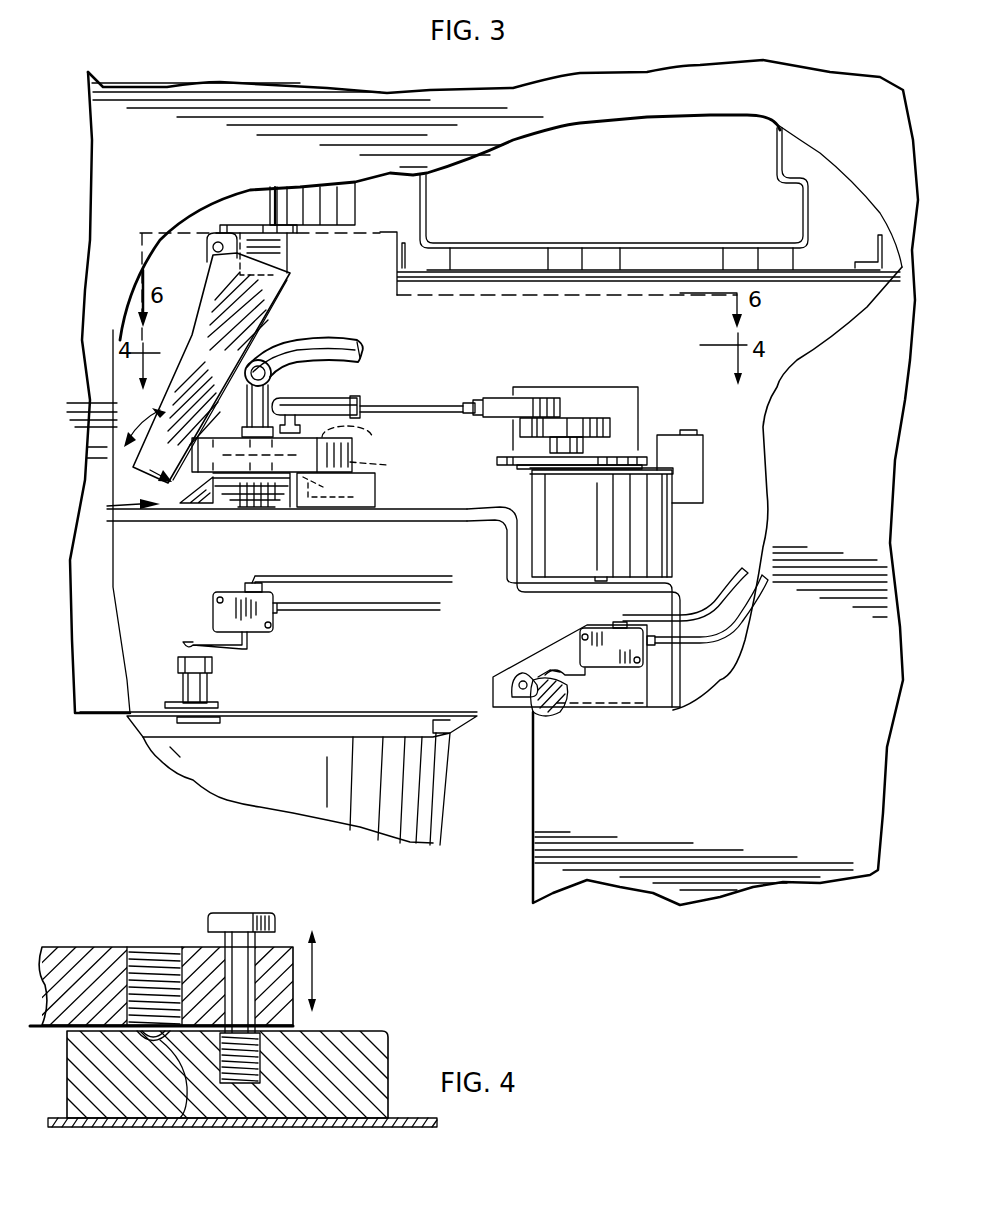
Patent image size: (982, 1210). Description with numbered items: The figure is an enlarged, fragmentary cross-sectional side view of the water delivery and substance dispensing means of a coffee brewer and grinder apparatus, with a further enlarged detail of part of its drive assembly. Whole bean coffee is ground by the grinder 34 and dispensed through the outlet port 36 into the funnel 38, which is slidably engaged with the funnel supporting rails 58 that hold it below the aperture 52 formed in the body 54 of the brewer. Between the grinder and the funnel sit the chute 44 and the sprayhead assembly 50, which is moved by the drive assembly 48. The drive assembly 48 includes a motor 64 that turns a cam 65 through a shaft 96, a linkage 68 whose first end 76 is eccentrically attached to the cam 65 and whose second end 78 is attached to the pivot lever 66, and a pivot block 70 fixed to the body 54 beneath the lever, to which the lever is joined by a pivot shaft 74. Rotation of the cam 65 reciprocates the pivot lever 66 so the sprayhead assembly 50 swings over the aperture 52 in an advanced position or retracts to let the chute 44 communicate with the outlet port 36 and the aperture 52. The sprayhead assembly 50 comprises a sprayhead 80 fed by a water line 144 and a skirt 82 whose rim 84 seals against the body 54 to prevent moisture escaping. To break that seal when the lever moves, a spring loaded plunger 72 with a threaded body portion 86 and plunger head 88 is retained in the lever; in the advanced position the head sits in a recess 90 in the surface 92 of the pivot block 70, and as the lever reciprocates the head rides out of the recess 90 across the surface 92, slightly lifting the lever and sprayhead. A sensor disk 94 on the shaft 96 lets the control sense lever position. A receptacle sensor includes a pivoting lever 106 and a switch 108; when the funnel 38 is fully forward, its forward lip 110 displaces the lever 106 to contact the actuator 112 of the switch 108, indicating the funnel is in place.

In FIG. 3, the grinder 34 is at (297, 200).
In FIG. 3, the outlet port 36 is at (287, 247).
In FIG. 3, the funnel 38 is at (313, 797).
In FIG. 3, the chute 44 is at (210, 287).
In FIG. 3, the drive assembly 48 is at (455, 388).
In FIG. 3, the sprayhead assembly 50 is at (135, 482).
In FIG. 3, the aperture 52 is at (330, 521).
In FIG. 3, the body 54 is at (490, 508).
In FIG. 3, the funnel supporting rails 58 is at (460, 742).
In FIG. 3, the motor 64 is at (650, 545).
In FIG. 3, the cam 65 is at (572, 425).
In FIG. 3, the pivot lever 66 is at (223, 447).
In FIG. 3, the linkage 68 is at (393, 405).
In FIG. 3, the pivot block 70 is at (312, 500).
In FIG. 4, the pivot block 70 is at (396, 1046).
In FIG. 3, the spring loaded plunger 72 is at (354, 443).
In FIG. 4, the spring loaded plunger 72 is at (133, 935).
In FIG. 3, the pivot shaft 74 is at (382, 467).
In FIG. 4, the pivot shaft 74 is at (220, 963).
In FIG. 3, the first end 76 is at (493, 398).
In FIG. 3, the second end 78 is at (188, 328).
In FIG. 3, the sprayhead 80 is at (280, 515).
In FIG. 3, the skirt 82 is at (138, 509).
In FIG. 3, the rim 84 is at (175, 521).
In FIG. 4, the threaded body portion 86 is at (117, 957).
In FIG. 4, the plunger head 88 is at (180, 1118).
In FIG. 3, the recess 90 is at (630, 368).
In FIG. 4, the recess 90 is at (130, 1031).
In FIG. 3, the surface 92 is at (275, 646).
In FIG. 4, the surface 92 is at (357, 1030).
In FIG. 3, the sensor disk 94 is at (497, 458).
In FIG. 3, the shaft 96 is at (555, 442).
In FIG. 3, the pivoting lever 106 is at (553, 710).
In FIG. 3, the switch 108 is at (545, 705).
In FIG. 3, the forward lip 110 is at (515, 695).
In FIG. 3, the actuator 112 is at (582, 693).
In FIG. 3, the water line 144 is at (243, 358).